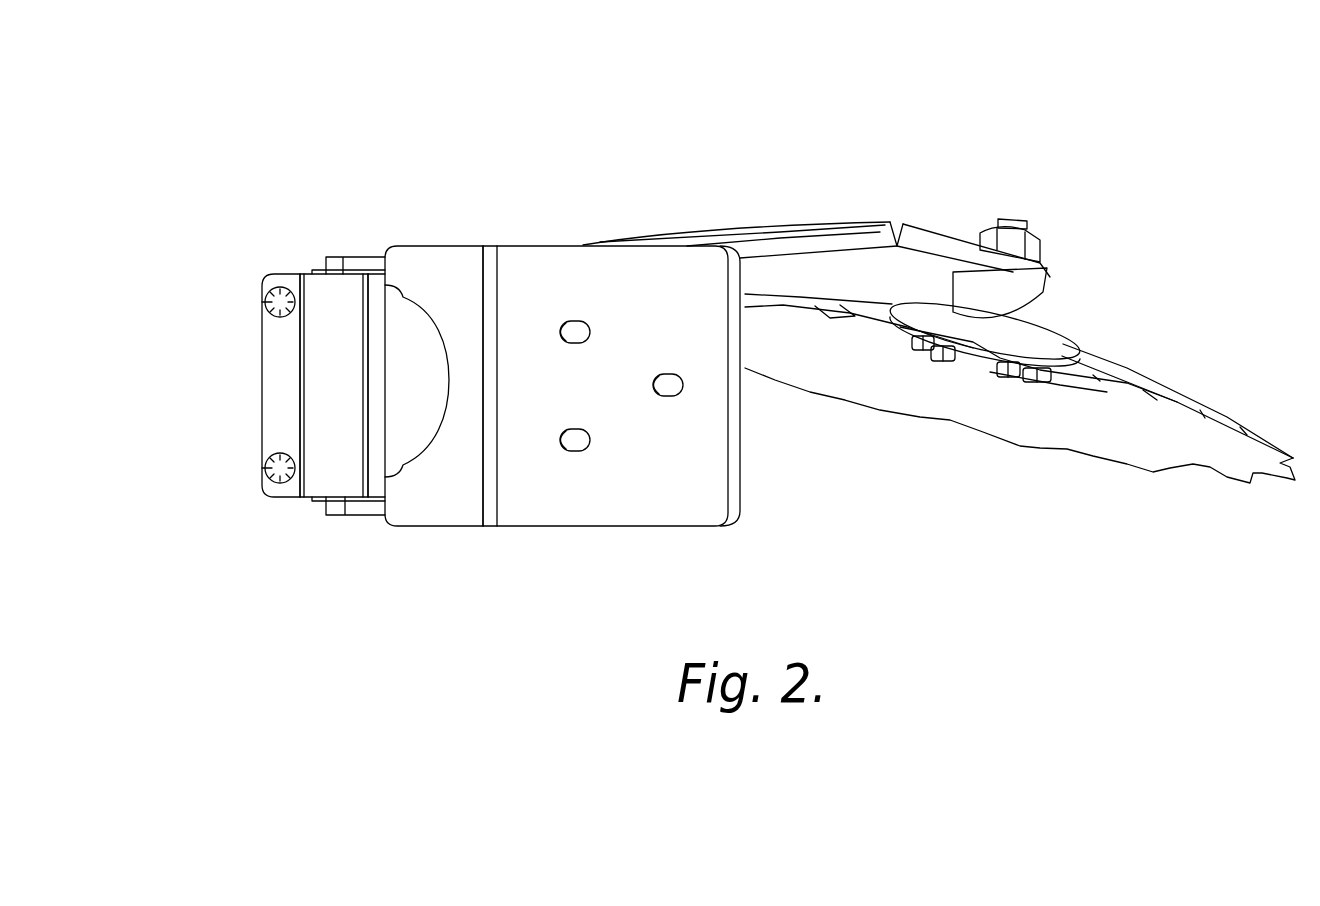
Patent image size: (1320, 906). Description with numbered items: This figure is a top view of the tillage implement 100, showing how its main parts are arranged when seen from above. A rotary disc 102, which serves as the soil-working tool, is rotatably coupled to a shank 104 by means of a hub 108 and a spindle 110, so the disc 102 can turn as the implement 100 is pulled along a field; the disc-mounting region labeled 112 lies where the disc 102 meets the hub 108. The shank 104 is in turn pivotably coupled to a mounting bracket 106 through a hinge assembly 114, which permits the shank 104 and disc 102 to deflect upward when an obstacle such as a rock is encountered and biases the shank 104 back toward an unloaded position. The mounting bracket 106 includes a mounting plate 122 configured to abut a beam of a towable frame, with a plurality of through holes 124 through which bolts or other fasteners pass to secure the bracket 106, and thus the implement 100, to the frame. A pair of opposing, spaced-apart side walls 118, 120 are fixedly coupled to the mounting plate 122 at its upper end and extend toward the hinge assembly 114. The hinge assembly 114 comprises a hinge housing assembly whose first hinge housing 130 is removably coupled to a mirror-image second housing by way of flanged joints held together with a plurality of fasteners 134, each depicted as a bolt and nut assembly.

The tillage implement 100 is at (233, 163).
The rotary disc 102 is at (1062, 423).
The shank 104 is at (798, 240).
The mounting bracket 106 is at (426, 270).
The hub 108 is at (1018, 303).
The spindle 110 is at (1015, 240).
The hub disc 112 is at (962, 384).
The hinge assembly 114 is at (240, 356).
The side wall 118 is at (355, 264).
The side wall 120 is at (345, 507).
The mounting plate 122 is at (575, 505).
The through holes 124 is at (657, 392).
The first hinge housing 130 is at (325, 405).
The fasteners 134 is at (265, 303).